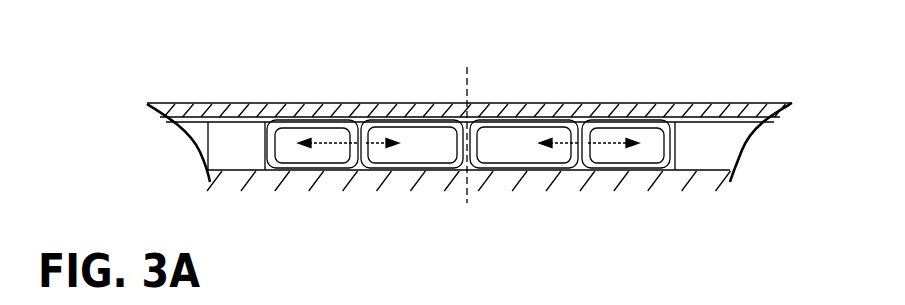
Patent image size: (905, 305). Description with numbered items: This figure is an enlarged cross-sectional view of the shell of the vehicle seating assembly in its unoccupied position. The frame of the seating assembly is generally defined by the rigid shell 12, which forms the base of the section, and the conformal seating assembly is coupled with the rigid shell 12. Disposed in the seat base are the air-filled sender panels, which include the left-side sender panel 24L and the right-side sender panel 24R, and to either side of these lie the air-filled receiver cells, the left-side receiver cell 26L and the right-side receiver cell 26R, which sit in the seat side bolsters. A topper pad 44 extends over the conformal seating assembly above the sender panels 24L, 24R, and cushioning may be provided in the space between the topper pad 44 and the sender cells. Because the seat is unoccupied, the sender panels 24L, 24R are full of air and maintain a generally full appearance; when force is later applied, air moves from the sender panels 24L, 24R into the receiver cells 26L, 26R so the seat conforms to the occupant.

The rigid shell 12 is at (432, 175).
The left-side sender panel 24L is at (427, 119).
The right-side sender panel 24R is at (516, 137).
The left-side air-filled receiver cell 26L is at (323, 137).
The right-side air-filled receiver cell 26R is at (616, 135).
The topper pad 44 is at (432, 137).